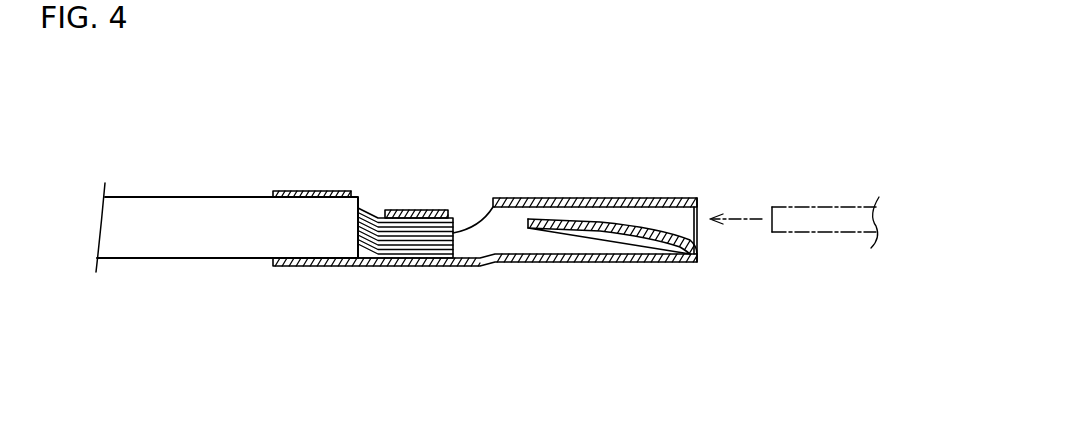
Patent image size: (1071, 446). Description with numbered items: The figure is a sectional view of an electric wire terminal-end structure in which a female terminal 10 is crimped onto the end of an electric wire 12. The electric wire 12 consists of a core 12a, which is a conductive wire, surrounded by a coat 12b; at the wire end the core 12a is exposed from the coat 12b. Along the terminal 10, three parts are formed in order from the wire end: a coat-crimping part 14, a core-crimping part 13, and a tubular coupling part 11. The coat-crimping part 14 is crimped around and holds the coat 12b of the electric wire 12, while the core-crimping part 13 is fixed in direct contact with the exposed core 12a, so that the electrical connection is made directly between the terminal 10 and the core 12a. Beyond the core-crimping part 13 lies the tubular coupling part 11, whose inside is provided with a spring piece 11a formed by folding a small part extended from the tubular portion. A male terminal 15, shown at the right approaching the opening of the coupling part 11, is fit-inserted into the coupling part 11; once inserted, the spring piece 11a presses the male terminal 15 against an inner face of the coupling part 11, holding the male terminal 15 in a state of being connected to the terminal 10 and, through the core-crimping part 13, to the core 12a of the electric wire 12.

The terminal 10 is at (495, 247).
The coupling part 11 is at (626, 210).
The spring piece 11a is at (567, 220).
The electric wire 12 is at (159, 176).
The core 12a is at (365, 210).
The coat 12b is at (210, 237).
The core-crimping part 13 is at (418, 212).
The coat-crimping part 14 is at (315, 192).
The male terminal 15 is at (823, 208).